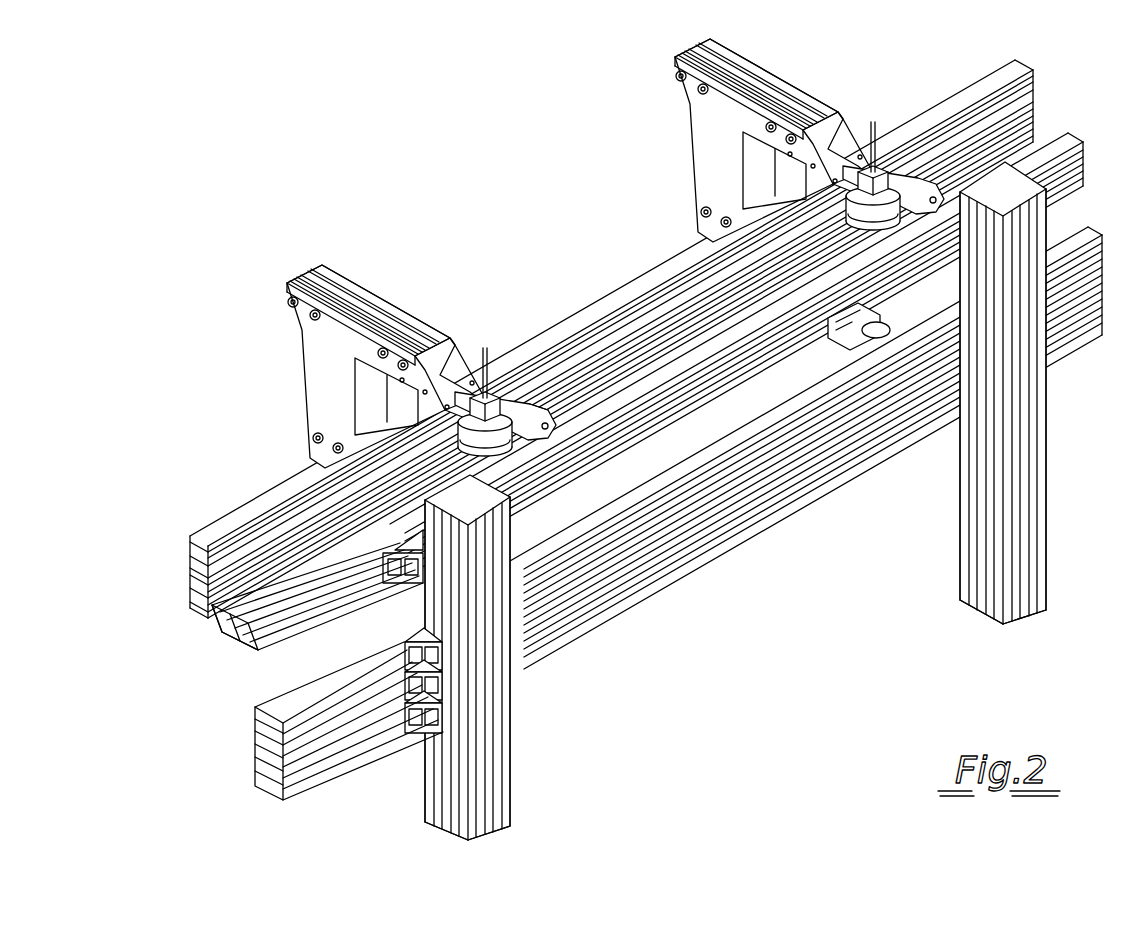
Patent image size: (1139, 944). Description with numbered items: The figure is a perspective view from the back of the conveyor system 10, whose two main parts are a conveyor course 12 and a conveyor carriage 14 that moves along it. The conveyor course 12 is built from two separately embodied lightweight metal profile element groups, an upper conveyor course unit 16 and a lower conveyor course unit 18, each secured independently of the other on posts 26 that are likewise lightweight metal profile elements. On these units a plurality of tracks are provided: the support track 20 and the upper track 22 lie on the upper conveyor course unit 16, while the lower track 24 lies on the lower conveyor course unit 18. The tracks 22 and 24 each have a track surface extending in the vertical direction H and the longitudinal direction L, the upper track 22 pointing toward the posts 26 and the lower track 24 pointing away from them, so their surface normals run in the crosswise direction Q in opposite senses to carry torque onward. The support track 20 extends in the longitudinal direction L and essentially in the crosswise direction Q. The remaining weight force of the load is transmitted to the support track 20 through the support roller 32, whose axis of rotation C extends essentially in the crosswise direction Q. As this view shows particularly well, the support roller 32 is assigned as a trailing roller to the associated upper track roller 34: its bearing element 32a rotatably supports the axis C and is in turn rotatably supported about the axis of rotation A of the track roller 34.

The conveyor system 10 is at (93, 116).
The conveyor course 12 is at (742, 486).
The conveyor carriage 14 is at (362, 258).
The upper conveyor course unit 16 is at (208, 530).
The lower conveyor course unit 18 is at (278, 802).
The support track 20 is at (240, 646).
The upper track 22 is at (197, 568).
The lower track 24 is at (318, 668).
The posts 26 is at (510, 772).
The support roller 32 is at (530, 402).
The bearing element 32a is at (555, 405).
The upper track roller 34 is at (471, 400).
The axis of rotation of the track roller A is at (485, 395).
The axis of rotation of the support roller C is at (548, 432).
The vertical direction H is at (510, 138).
The longitudinal direction L is at (473, 116).
The crosswise direction Q is at (473, 75).